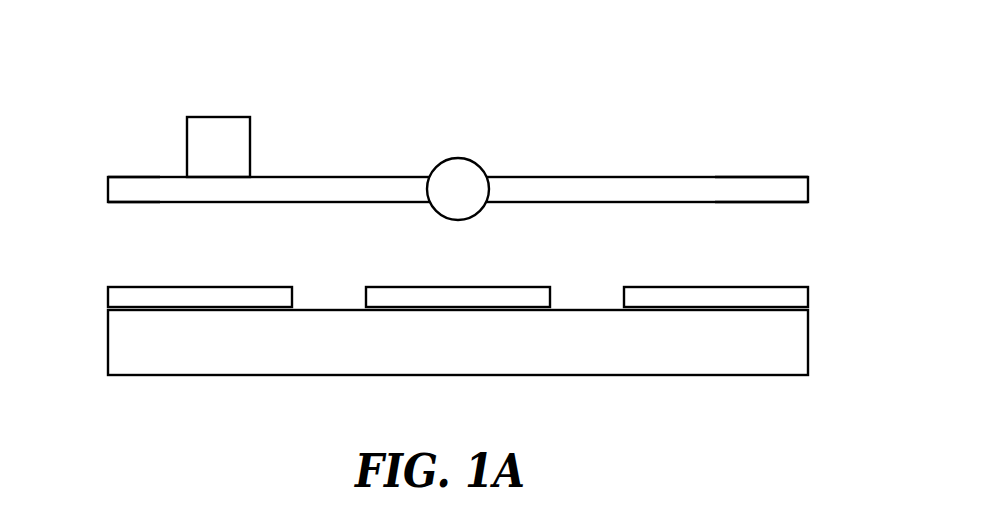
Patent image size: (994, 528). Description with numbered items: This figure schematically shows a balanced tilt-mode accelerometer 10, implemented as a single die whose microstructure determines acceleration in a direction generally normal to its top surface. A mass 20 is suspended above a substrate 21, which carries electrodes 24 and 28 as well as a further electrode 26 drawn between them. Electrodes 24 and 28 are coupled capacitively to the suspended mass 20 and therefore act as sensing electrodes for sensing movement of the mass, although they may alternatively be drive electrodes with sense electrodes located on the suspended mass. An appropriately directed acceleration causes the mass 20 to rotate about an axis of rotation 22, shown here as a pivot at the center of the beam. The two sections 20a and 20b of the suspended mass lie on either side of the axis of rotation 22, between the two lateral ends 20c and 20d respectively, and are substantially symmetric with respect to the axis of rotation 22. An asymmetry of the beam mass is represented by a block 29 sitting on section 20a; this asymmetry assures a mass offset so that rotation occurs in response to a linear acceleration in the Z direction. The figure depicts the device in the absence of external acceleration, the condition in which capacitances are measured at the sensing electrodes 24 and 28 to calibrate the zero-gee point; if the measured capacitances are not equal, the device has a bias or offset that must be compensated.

The tilt-mode accelerometer 10 is at (688, 98).
The mass 20 is at (349, 166).
The first section of suspended mass 20a is at (157, 175).
The second section of suspended mass 20b is at (717, 177).
The first lateral end 20c is at (158, 203).
The second lateral end 20d is at (718, 202).
The substrate 21 is at (125, 347).
The axis of rotation 22 is at (454, 170).
The electrode 24 is at (232, 297).
The second electrode pad 26 is at (469, 297).
The electrode 28 is at (688, 297).
The block 29 is at (227, 128).